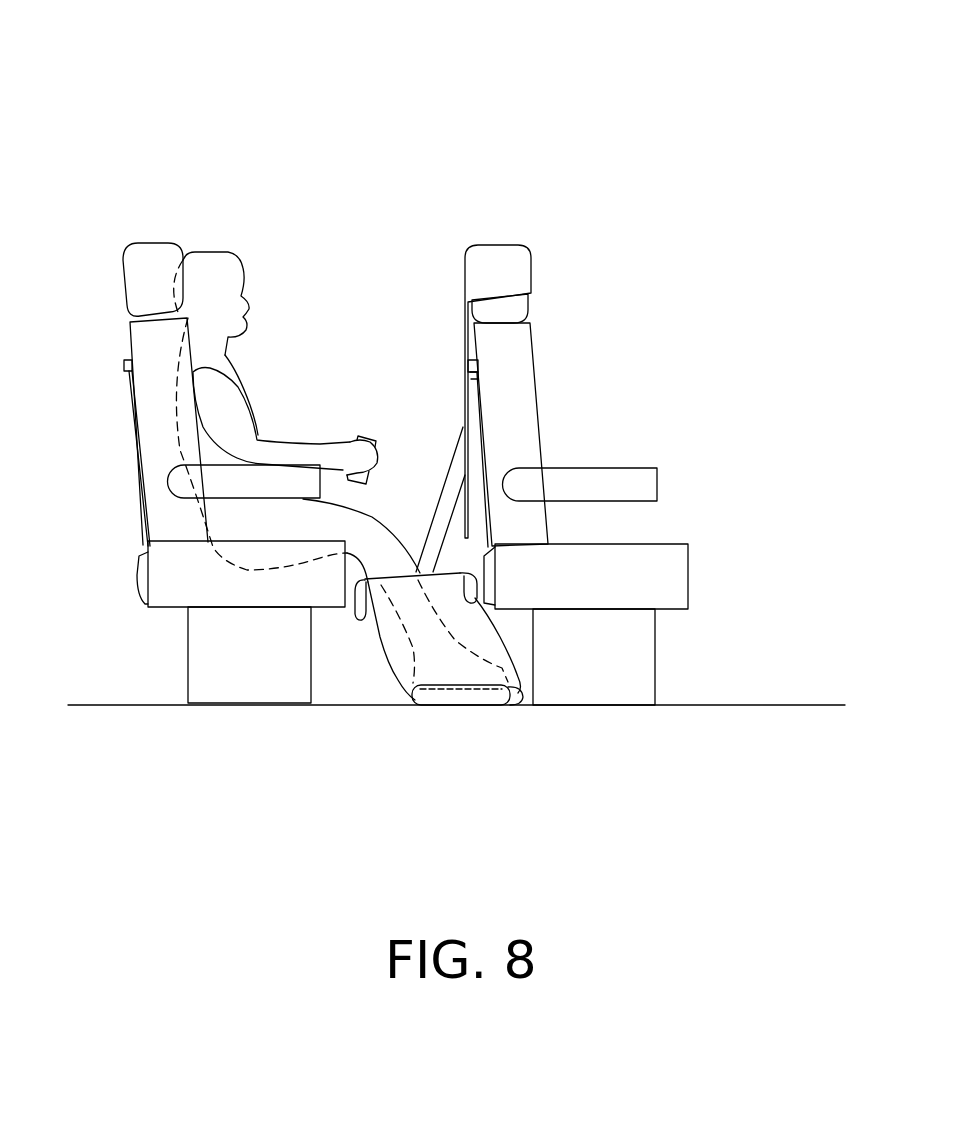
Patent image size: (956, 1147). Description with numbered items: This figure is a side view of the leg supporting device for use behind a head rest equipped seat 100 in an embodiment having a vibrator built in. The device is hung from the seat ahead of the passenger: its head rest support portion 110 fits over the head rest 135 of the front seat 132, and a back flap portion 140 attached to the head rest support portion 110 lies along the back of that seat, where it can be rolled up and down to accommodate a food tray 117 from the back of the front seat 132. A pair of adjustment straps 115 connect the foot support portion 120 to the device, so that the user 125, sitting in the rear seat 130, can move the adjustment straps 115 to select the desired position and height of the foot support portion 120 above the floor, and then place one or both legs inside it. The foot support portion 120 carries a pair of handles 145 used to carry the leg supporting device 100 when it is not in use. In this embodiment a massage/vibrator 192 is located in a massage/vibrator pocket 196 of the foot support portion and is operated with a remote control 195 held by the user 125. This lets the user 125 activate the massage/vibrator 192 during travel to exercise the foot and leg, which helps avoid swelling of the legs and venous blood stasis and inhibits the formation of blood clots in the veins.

The leg supporting device for use behind a head rest equipped seat 100 is at (142, 73).
The head rest support portion 110 is at (554, 335).
The adjustment straps 115 is at (416, 452).
The food tray 117 is at (569, 434).
The foot support portion 120 is at (419, 684).
The user 125 is at (341, 422).
The rear seat 130 is at (206, 510).
The front seat 132 is at (657, 586).
The head rest 135 is at (385, 246).
The back flap portion 140 is at (419, 402).
The handles 145 is at (450, 684).
The massage/vibrator 192 is at (469, 751).
The remote control 195 is at (327, 418).
The massage/vibrator pocket 196 is at (583, 778).